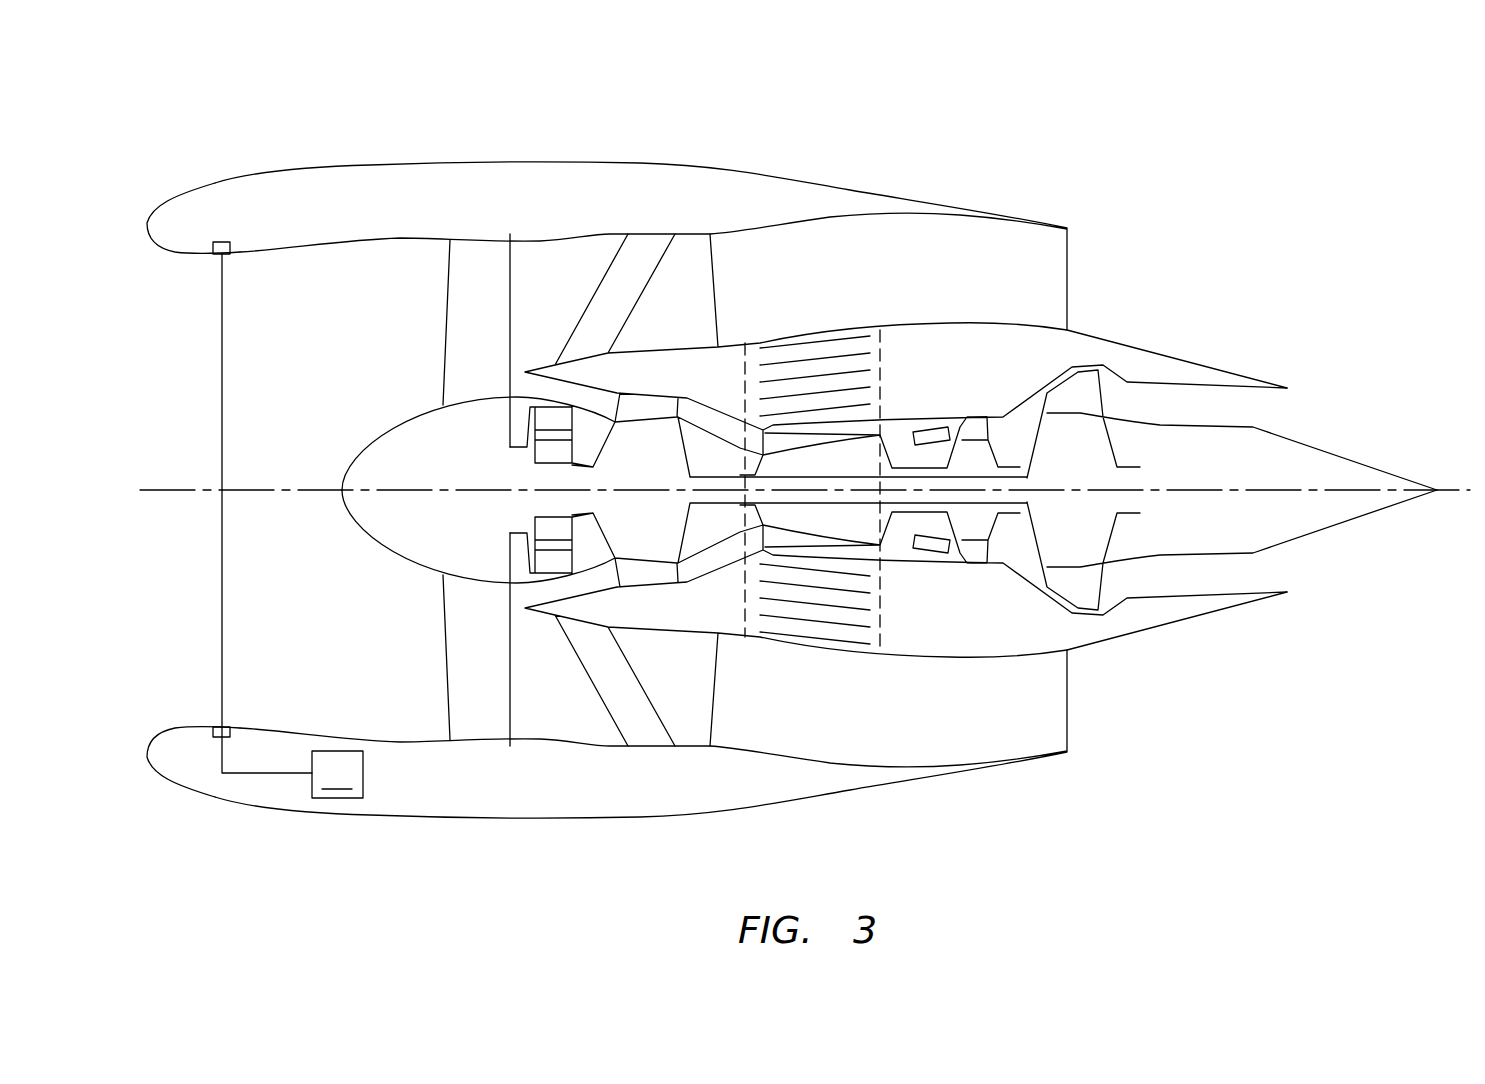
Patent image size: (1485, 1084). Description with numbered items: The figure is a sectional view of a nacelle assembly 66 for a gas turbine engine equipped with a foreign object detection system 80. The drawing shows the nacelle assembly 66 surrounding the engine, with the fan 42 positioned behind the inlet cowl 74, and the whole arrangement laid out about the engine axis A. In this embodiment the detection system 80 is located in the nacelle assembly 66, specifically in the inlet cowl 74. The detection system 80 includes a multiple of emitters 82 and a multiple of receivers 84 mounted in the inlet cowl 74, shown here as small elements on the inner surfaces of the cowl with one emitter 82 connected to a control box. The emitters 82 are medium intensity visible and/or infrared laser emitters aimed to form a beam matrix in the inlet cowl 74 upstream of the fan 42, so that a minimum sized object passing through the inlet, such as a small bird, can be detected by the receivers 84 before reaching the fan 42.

The fan 42 is at (444, 660).
The nacelle assembly 66 is at (494, 152).
The inlet cowl 74 is at (247, 178).
The detection system 80 is at (189, 661).
The emitter 82 is at (224, 728).
The receiver 84 is at (227, 255).
The engine central longitudinal axis A is at (1460, 492).